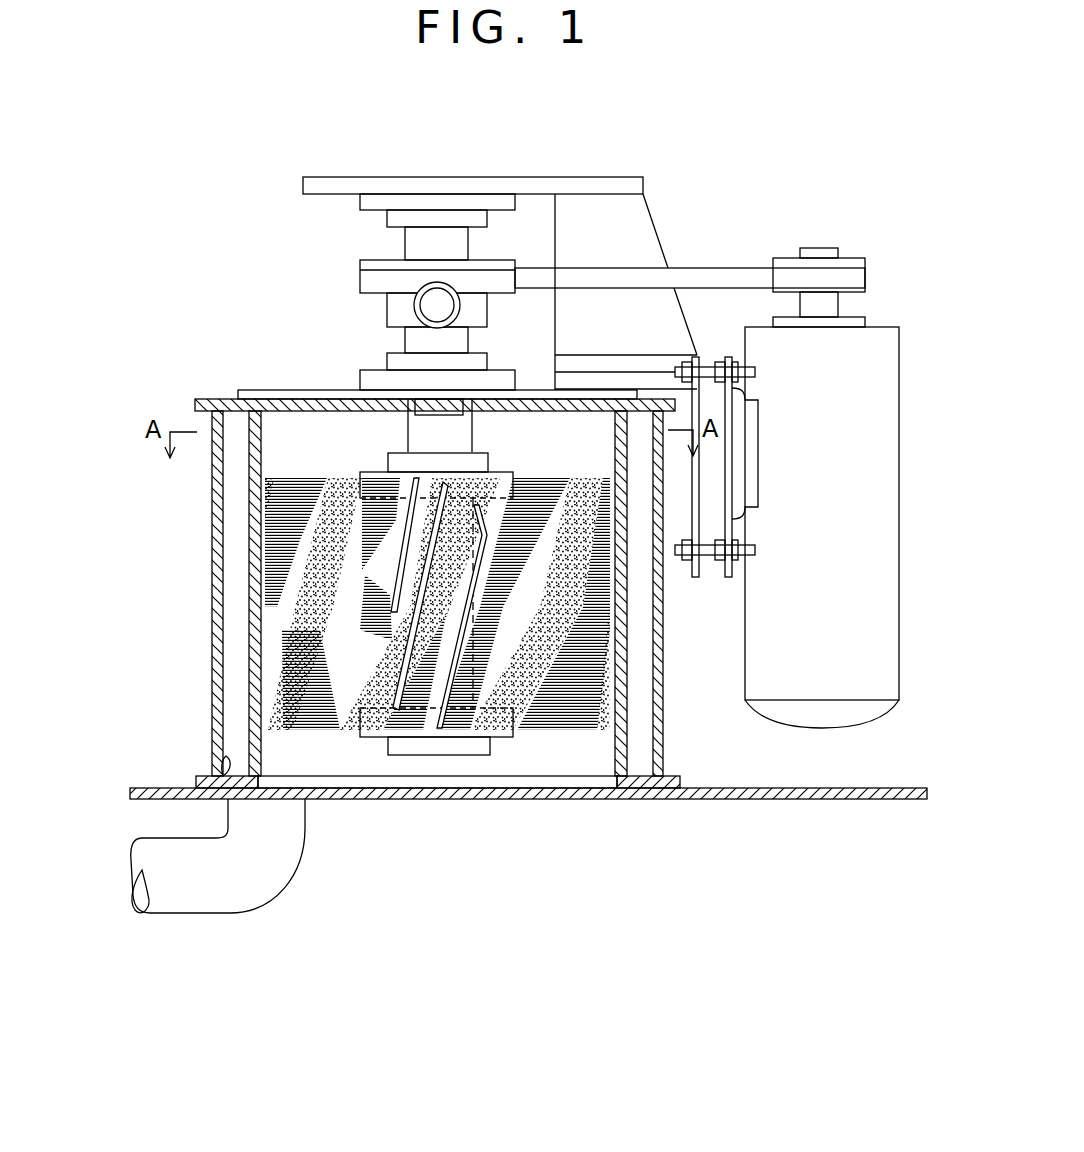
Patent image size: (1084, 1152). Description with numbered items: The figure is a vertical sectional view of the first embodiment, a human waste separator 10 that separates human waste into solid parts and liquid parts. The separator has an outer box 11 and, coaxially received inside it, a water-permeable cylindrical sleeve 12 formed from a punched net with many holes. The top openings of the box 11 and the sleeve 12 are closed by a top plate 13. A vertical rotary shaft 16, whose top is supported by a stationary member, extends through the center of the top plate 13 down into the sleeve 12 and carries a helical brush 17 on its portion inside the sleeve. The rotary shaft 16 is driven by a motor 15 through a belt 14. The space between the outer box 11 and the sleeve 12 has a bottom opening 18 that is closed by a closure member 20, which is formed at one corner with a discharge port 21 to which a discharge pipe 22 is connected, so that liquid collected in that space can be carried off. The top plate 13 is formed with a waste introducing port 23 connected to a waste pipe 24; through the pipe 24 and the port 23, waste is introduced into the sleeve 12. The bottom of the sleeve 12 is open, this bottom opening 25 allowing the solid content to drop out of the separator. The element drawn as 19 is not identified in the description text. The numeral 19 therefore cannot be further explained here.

The human waste separator 10 is at (407, 593).
The outer box 11 is at (218, 517).
The water-permeable cylindrical sleeve 12 is at (250, 468).
The top plate 13 is at (205, 403).
The belt 14 is at (708, 278).
The motor 15 is at (833, 447).
The vertical rotary shaft 16 is at (413, 430).
The helical brush 17 is at (297, 630).
The bottom opening 18 is at (228, 762).
The bottom plate 19 is at (262, 777).
The closure member 20 is at (207, 777).
The discharge port 21 is at (285, 800).
The discharge pipe 22 is at (242, 888).
The waste introducing port 23 is at (460, 418).
The waste pipe 24 is at (428, 303).
The bottom opening of the sleeve 25 is at (541, 780).